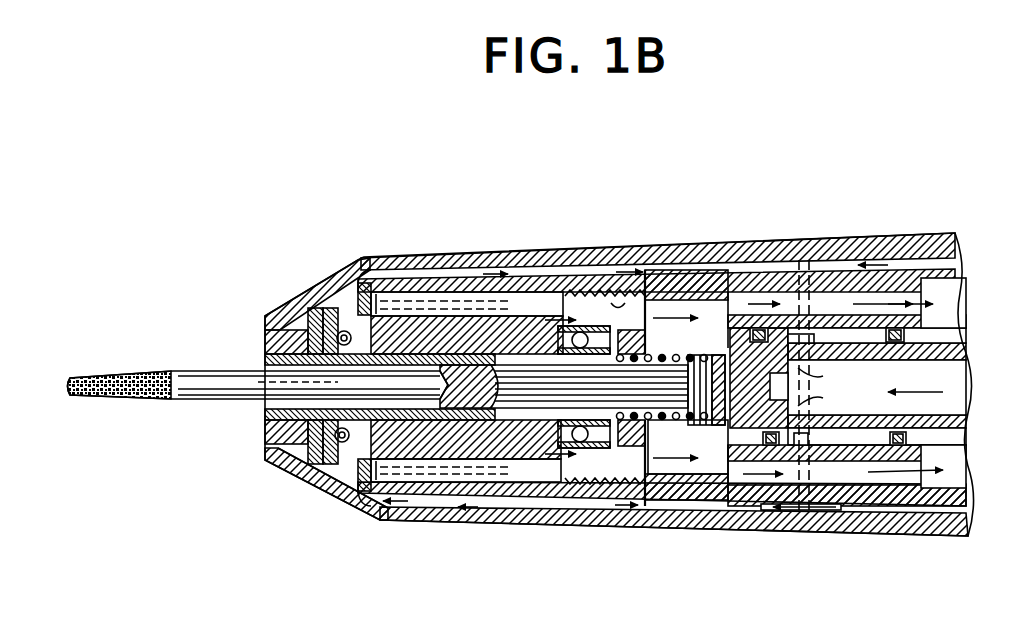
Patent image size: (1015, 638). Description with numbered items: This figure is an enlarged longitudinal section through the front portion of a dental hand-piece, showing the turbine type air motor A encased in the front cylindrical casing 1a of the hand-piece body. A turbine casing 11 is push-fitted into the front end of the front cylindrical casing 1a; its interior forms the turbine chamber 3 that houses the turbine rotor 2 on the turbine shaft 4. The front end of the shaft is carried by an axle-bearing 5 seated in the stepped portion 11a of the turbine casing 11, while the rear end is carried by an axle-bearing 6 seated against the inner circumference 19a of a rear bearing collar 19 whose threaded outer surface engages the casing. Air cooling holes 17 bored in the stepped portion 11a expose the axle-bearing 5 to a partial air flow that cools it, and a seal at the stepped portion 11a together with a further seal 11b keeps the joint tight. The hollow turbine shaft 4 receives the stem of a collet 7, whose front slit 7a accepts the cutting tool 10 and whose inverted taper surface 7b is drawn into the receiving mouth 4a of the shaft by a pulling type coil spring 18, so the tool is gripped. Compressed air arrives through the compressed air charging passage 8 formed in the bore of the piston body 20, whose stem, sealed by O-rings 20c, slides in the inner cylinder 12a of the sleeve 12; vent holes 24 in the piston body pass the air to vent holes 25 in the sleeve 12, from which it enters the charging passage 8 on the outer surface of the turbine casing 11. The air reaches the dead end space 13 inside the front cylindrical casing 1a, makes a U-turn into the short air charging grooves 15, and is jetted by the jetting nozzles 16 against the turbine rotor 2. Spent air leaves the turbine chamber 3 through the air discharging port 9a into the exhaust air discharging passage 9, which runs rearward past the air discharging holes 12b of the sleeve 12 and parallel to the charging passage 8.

The front cylindrical casing 1a is at (722, 248).
The turbine rotor 2 is at (458, 482).
The turbine chamber 3 is at (539, 264).
The turbine shaft 4 is at (486, 300).
The receiving mouth 4a is at (278, 422).
The front axle-bearing 5 is at (300, 312).
The rear axle-bearing 6 is at (573, 444).
The collet 7 is at (440, 312).
The slit 7a is at (268, 402).
The inverted taper surface 7b is at (270, 326).
The compressed air charging passage 8 is at (586, 272).
The exhaust air discharging passage 9 is at (940, 285).
The air discharging port 9a is at (566, 284).
The cutting tool 10 is at (108, 362).
The turbine casing 11 is at (464, 296).
The stepped portion 11a is at (312, 478).
The seal 11b is at (305, 292).
The sleeve 12 is at (862, 268).
The inner cylinder 12a is at (842, 300).
The air discharging holes 12b is at (856, 522).
The dead end space 13 is at (352, 262).
The air charging grooves 15 is at (384, 288).
The jetting nozzle 16 is at (513, 492).
The air cooling holes 17 is at (320, 296).
The pulling type coil spring 18 is at (648, 410).
The rear bearing collar 19 is at (662, 486).
The inner circumference of the rear bearing collar 19a is at (600, 452).
The piston body 20 is at (950, 456).
The O-rings 20c is at (752, 466).
The vent holes 24 is at (805, 372).
The vent holes 25 is at (797, 262).
The turbine type air motor A is at (484, 246).